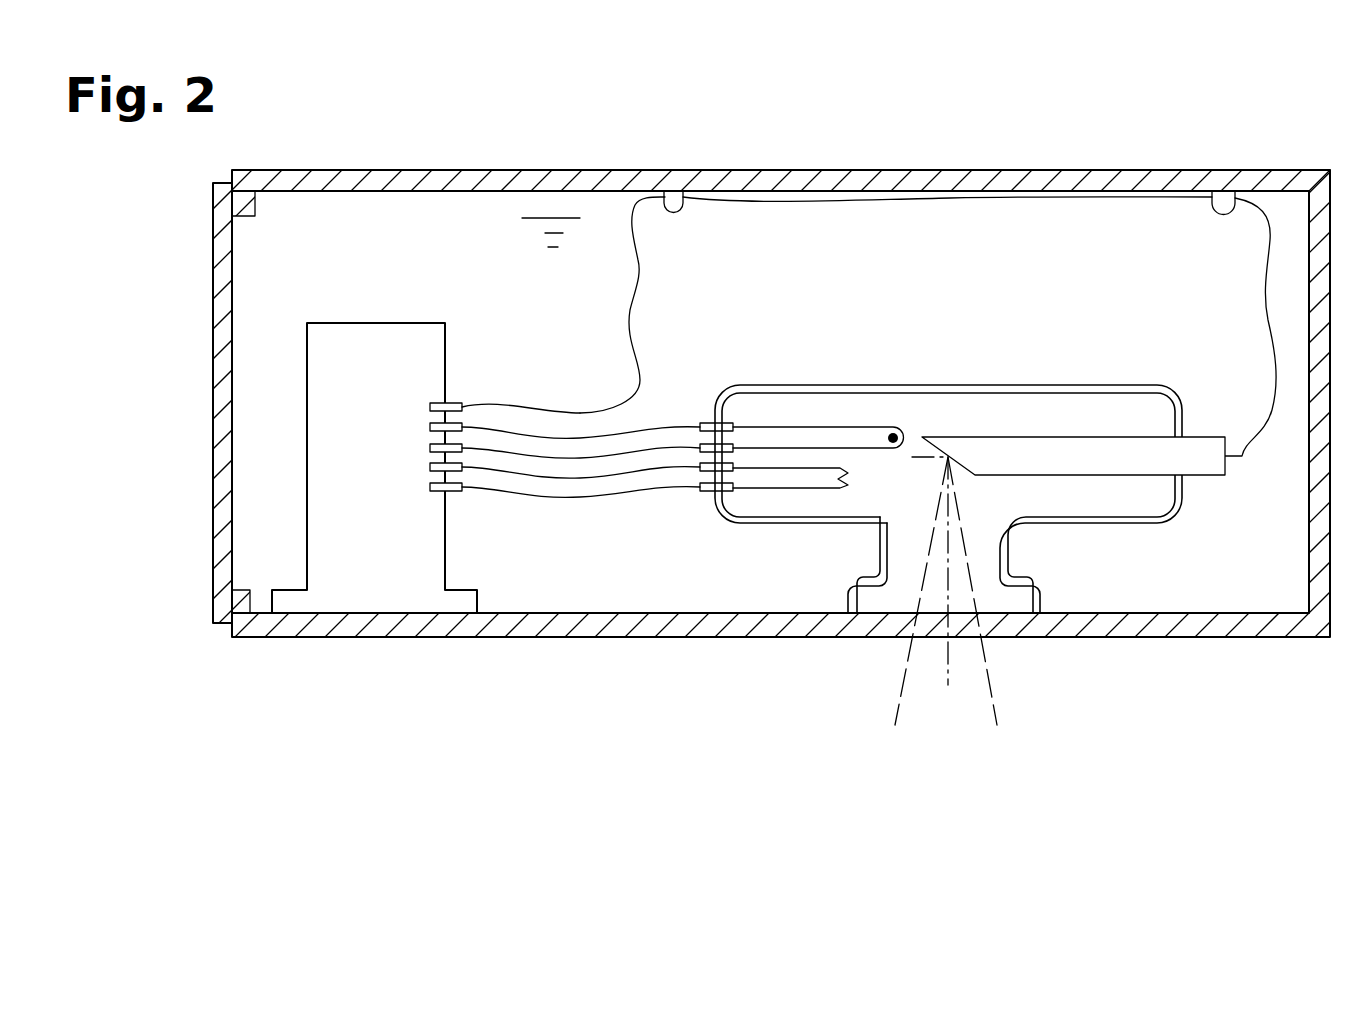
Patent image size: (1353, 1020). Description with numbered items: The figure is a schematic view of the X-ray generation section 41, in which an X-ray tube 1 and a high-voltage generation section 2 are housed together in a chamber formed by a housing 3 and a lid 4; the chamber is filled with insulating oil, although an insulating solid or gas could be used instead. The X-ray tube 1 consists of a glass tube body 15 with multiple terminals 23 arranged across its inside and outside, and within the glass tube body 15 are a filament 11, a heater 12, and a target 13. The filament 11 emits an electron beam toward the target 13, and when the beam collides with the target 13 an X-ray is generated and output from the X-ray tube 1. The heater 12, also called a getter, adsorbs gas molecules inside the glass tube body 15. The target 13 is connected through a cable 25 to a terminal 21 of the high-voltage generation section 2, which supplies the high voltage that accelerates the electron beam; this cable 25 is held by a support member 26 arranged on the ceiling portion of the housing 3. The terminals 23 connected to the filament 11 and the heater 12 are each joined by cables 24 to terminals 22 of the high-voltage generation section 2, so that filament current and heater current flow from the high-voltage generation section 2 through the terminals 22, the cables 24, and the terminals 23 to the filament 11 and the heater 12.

The X-ray tube 1 is at (971, 440).
The high-voltage generation section 2 is at (380, 303).
The housing 3 is at (891, 178).
The lid 4 is at (211, 317).
The filament 11 is at (891, 433).
The heater 12 is at (845, 488).
The target 13 is at (1020, 455).
The glass tube body 15 is at (1158, 388).
The terminal 21 is at (470, 403).
The terminals 22 is at (432, 448).
The terminals 23 is at (704, 420).
The cables 24 is at (520, 450).
The cable 25 is at (643, 280).
The support member 26 is at (682, 212).
The X-ray generation section 41 is at (748, 702).